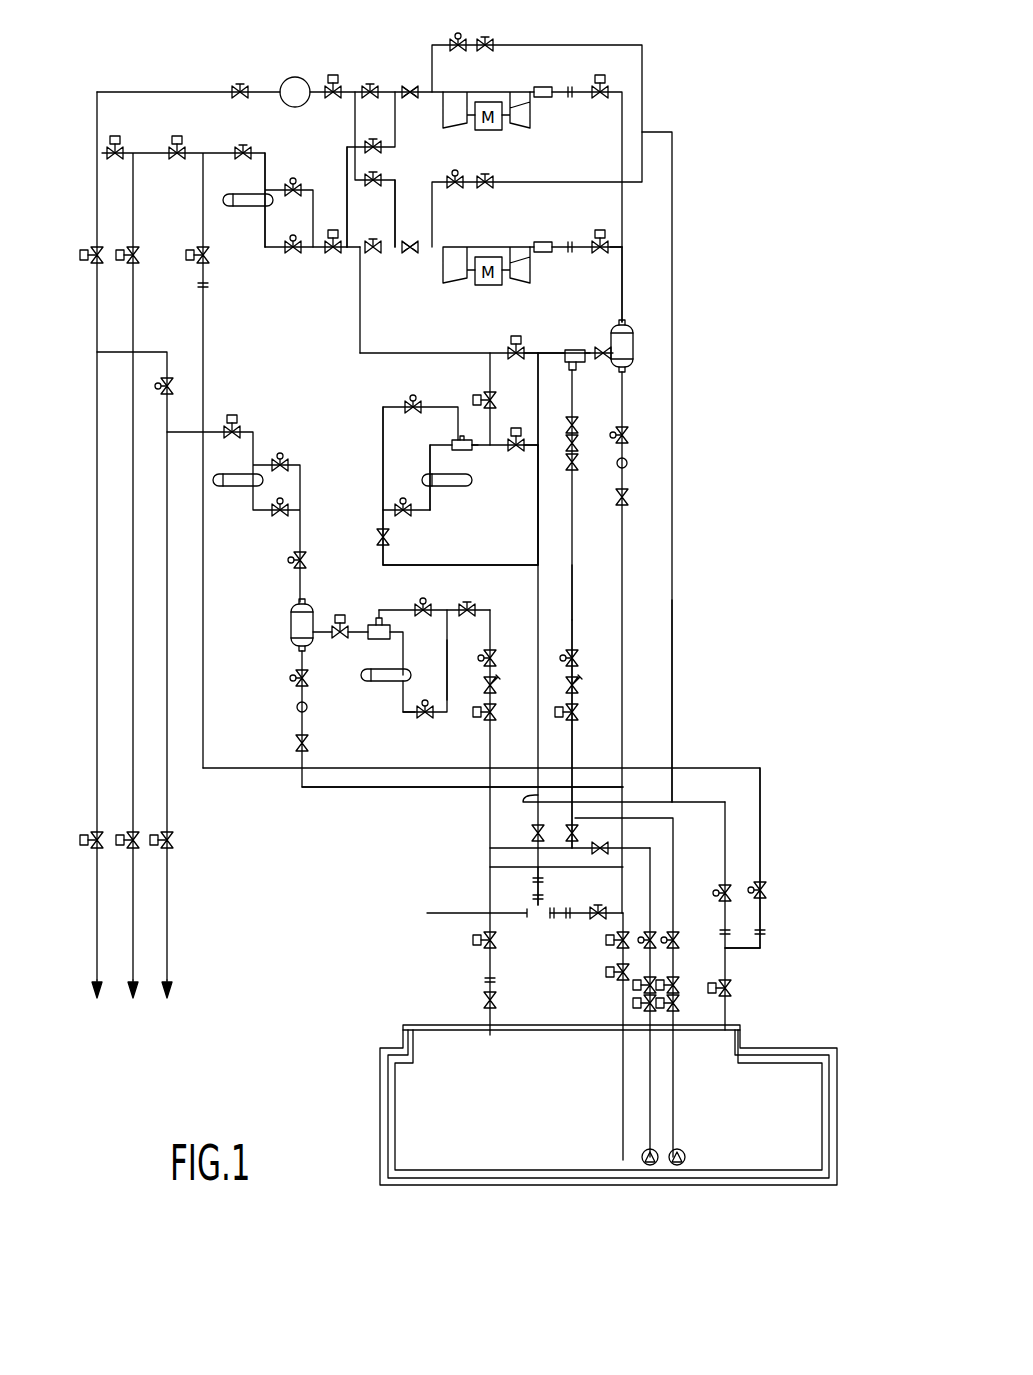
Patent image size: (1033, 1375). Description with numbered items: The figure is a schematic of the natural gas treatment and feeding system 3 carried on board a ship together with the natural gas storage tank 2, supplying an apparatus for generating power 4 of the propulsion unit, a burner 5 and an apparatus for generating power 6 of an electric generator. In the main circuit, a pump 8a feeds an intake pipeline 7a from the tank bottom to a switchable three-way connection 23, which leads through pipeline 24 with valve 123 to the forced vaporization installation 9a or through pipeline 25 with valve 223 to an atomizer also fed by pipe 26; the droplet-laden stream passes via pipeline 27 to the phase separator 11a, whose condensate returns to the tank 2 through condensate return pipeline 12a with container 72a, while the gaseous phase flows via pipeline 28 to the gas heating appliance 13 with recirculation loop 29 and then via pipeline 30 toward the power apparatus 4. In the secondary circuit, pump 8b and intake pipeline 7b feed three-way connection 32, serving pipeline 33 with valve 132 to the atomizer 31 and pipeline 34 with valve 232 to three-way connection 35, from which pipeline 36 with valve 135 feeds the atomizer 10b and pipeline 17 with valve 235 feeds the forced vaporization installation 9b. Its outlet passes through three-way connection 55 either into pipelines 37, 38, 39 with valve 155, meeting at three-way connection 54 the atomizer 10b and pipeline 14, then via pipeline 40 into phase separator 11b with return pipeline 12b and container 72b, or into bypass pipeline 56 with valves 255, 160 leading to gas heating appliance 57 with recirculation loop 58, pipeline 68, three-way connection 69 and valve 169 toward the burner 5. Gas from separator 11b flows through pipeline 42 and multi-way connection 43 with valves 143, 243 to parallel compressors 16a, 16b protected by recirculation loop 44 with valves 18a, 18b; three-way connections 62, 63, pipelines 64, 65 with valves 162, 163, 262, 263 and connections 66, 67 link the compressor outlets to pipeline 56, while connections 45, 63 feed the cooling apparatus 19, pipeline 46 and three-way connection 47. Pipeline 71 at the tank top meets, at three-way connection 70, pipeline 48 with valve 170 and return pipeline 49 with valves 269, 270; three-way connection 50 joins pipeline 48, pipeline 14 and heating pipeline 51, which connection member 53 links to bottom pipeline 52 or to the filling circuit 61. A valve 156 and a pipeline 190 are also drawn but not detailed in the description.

The natural gas storage tank 2 is at (445, 1136).
The natural gas treatment and feeding system 3 is at (686, 328).
The apparatus for generating power 4 is at (168, 1007).
The burner 5 is at (134, 1007).
The apparatus for generating power of an electric generator 6 is at (98, 1007).
The intake pipeline 7a is at (650, 1083).
The intake pipeline 7b is at (677, 1108).
The pump 8a is at (648, 1165).
The pump 8b is at (680, 1165).
The forced vaporization installation 9a is at (380, 687).
The forced vaporization installation 9b is at (455, 487).
The atomizer 10b is at (450, 442).
The phase separator 11a is at (290, 628).
The phase separator 11b is at (634, 345).
The condensate return pipeline 12a is at (365, 787).
The condensate return pipeline 12b is at (672, 560).
The gas heating appliance 13 is at (232, 487).
The pipeline 14 is at (535, 625).
The compressor 16a is at (492, 102).
The compressor 16b is at (492, 257).
The pipeline 17 is at (428, 495).
The valve 18a is at (452, 40).
The valve 18b is at (485, 176).
The cooling apparatus 19 is at (290, 77).
The switchable three-way connection 23 is at (460, 605).
The pipeline 24 is at (403, 718).
The pipeline 25 is at (376, 618).
The pipe 26 is at (447, 660).
The pipeline 27 is at (338, 615).
The pipeline 28 is at (290, 515).
The recirculation loop 29 is at (258, 510).
The pipeline 30 is at (170, 780).
The atomizer 31 is at (572, 350).
The switchable three-way connection 32 is at (575, 575).
The pipeline 33 is at (572, 545).
The pipeline 34 is at (475, 565).
The switchable three-way connection 35 is at (383, 500).
The pipeline 36 is at (383, 418).
The pipeline 37 is at (478, 450).
The pipeline 38 is at (518, 433).
The pipeline 39 is at (545, 353).
The pipeline 40 is at (603, 347).
The pipeline 42 is at (626, 292).
The multi-way connection 43 is at (622, 247).
The recirculation loop 44 is at (660, 125).
The switchable three-way connection 45 is at (336, 84).
The pipeline 46 is at (95, 300).
The switchable three-way connection 47 is at (97, 345).
The pipeline 48 is at (765, 855).
The pipeline 49 is at (710, 768).
The switchable three-way connection 50 is at (523, 802).
The pipeline 51 is at (538, 862).
The pipeline 52 is at (623, 1115).
The switchable three-way connection member 53 is at (540, 913).
The switchable three-way connection 54 is at (538, 445).
The switchable three-way connection 55 is at (530, 452).
The pipeline 56 is at (360, 340).
The gas heating appliance 57 is at (245, 210).
The recirculation loop 58 is at (290, 255).
The filling circuit 61 is at (445, 913).
The three-way connection 62 is at (410, 84).
The three-way connection 63 is at (410, 255).
The pipeline 64 is at (373, 240).
The pipeline 65 is at (347, 180).
The switchable three-way connection 66 is at (360, 270).
The switchable three-way connection 67 is at (350, 252).
The pipeline 68 is at (220, 148).
The switchable three-way connection 69 is at (185, 145).
The switchable three-way connection 70 is at (730, 950).
The pipeline 71 is at (730, 992).
The condensate collection container 72a is at (296, 708).
The condensate collection container 72b is at (628, 466).
The valve 123 is at (425, 720).
The valve 132 is at (578, 468).
The valve 135 is at (410, 398).
The valve 143 is at (597, 235).
The valve 155 is at (538, 480).
The valve 156 is at (335, 258).
The valve 160 is at (506, 340).
The valve 162 is at (384, 137).
The valve 163 is at (395, 255).
The valve 169 is at (160, 145).
The valve 170 is at (720, 890).
The line 190 is at (540, 838).
The valve 223 is at (425, 600).
The valve 232 is at (378, 535).
The valve 235 is at (406, 518).
The valve 243 is at (604, 80).
The valve 255 is at (484, 395).
The valve 262 is at (370, 84).
The valve 263 is at (384, 168).
The valve 269 is at (200, 245).
The valve 270 is at (765, 890).